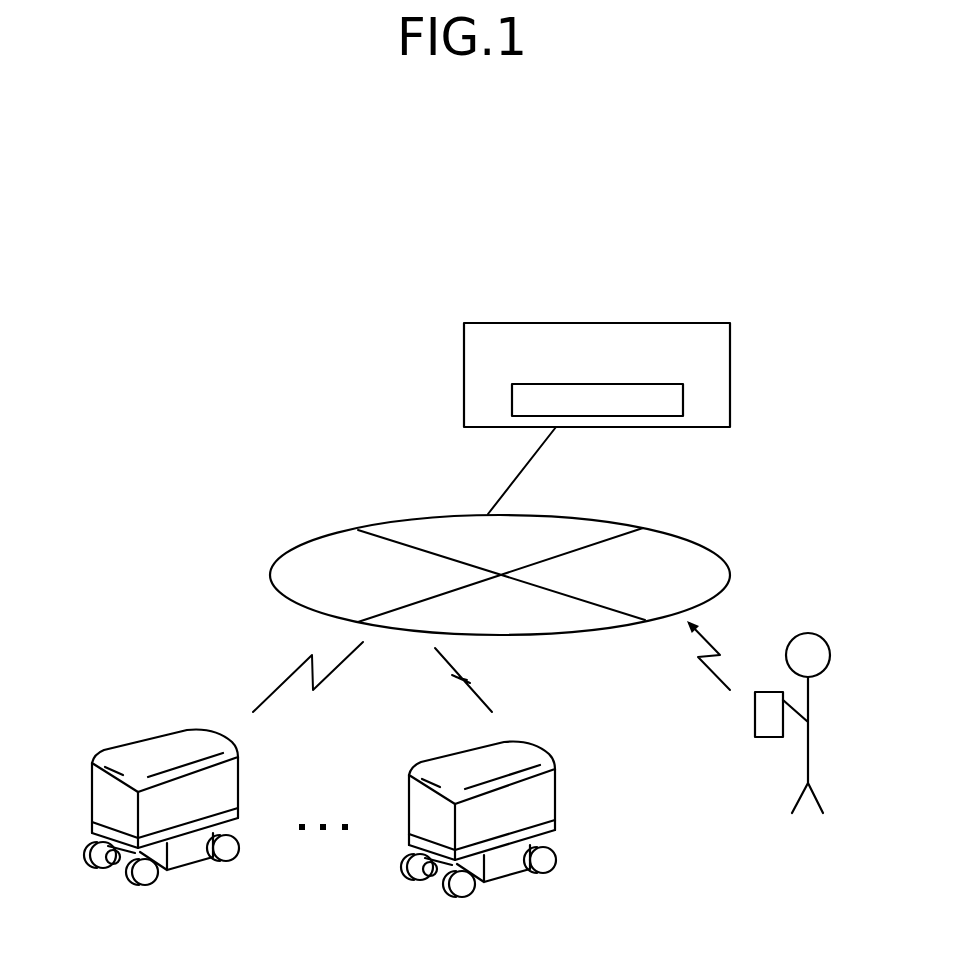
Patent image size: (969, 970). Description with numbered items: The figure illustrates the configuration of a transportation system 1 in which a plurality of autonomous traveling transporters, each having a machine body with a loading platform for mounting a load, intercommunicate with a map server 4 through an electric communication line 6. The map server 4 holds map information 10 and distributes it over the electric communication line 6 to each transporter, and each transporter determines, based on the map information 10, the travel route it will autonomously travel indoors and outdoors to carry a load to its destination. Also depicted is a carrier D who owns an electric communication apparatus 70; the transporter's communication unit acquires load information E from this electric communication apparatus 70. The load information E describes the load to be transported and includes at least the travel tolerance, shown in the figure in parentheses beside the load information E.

The transportation system 1 is at (487, 181).
The map server 4 is at (605, 323).
The electric communication line 6 is at (694, 543).
The map information 10 is at (683, 403).
The electric communication apparatus 70 is at (767, 717).
The carrier D is at (808, 633).
The load information E is at (703, 665).